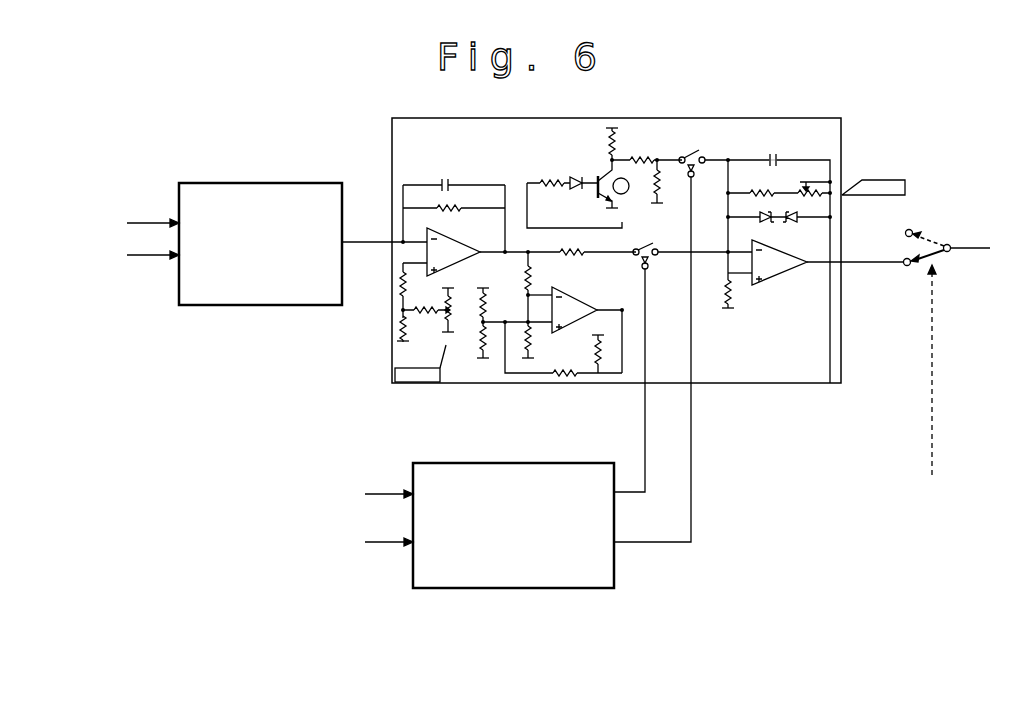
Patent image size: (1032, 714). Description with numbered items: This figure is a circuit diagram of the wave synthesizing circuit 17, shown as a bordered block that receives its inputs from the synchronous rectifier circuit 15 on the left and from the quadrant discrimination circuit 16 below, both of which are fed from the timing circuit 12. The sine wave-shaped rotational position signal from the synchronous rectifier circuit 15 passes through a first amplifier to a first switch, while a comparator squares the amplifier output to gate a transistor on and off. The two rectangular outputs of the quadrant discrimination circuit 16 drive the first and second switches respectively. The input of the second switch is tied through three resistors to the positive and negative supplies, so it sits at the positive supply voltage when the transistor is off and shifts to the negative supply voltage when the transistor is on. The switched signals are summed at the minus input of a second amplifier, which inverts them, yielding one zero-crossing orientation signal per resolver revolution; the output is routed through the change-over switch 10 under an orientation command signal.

The change-over switch 10 is at (937, 237).
The timing circuit 12 is at (262, 305).
The synchronous rectifier circuit 15 is at (272, 190).
The quadrant discrimination circuit 16 is at (521, 470).
The wave synthesizing circuit 17 is at (783, 118).